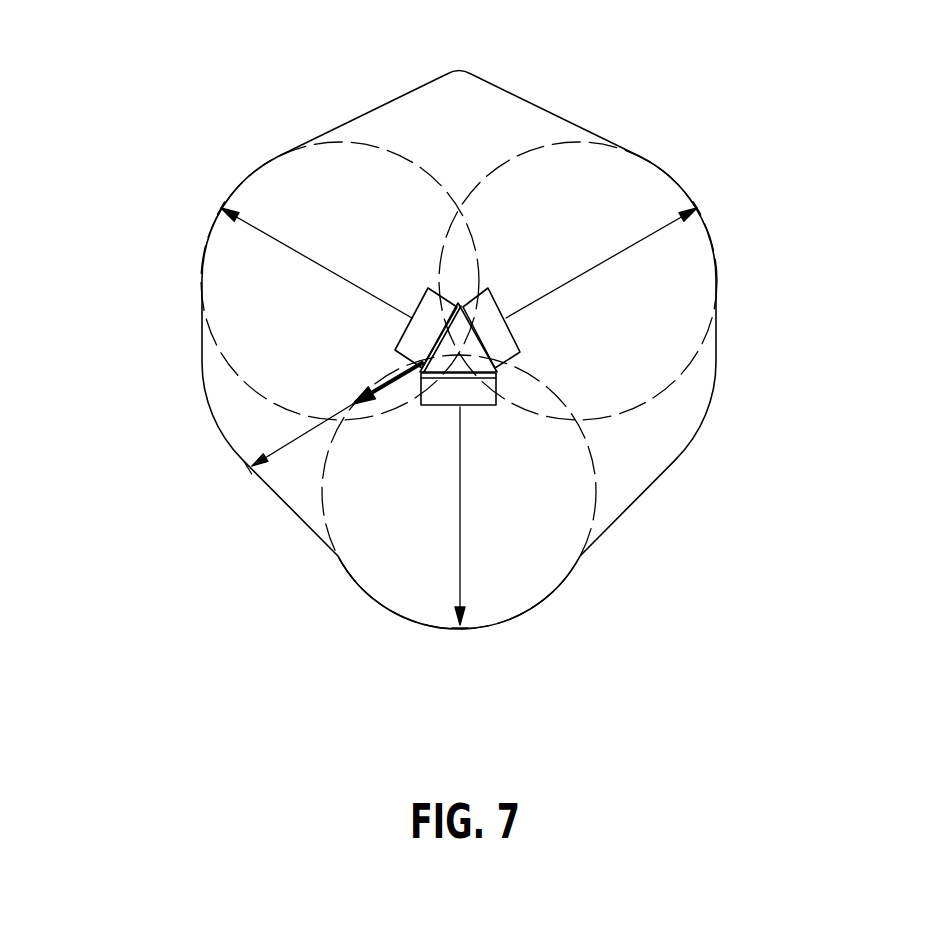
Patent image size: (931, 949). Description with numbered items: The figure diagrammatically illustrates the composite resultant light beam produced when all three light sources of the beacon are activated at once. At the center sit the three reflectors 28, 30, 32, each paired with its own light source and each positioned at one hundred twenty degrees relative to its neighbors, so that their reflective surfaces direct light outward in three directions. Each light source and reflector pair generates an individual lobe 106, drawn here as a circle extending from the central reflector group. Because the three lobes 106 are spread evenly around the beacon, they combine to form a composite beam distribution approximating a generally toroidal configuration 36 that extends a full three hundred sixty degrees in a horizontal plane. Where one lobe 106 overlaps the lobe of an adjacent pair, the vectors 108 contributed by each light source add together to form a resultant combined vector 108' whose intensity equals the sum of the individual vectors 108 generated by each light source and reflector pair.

The reflector 28 is at (489, 289).
The reflector 30 is at (443, 407).
The reflector 32 is at (428, 289).
The generally toroidal configuration 36 is at (697, 443).
The lobe 106 is at (361, 142).
The vector 108 is at (245, 328).
The resultant combined vector 108' is at (210, 439).